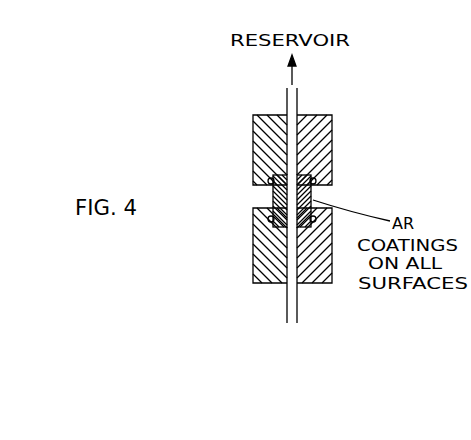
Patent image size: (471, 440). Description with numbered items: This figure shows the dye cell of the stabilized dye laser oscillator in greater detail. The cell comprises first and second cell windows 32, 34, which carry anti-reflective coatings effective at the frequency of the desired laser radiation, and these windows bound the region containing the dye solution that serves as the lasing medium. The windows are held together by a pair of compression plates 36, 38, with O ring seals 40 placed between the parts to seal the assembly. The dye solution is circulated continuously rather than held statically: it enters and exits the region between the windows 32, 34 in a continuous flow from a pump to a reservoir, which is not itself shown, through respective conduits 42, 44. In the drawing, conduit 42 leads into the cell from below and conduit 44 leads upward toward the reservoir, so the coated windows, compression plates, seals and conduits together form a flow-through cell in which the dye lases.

The first cell window 32 is at (273, 196).
The second cell window 34 is at (311, 196).
The compression plate 36 is at (253, 140).
The compression plate 38 is at (332, 128).
The O ring seals 40 is at (269, 220).
The conduit 42 is at (287, 303).
The conduit 44 is at (287, 100).